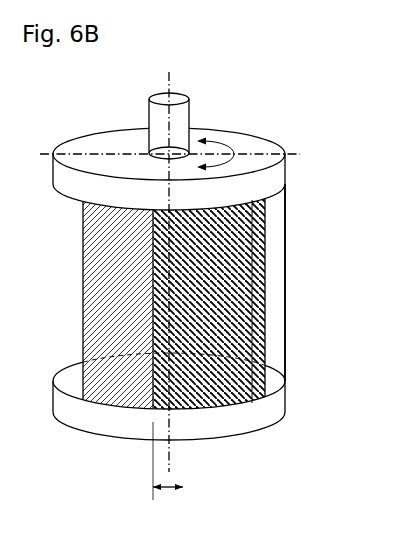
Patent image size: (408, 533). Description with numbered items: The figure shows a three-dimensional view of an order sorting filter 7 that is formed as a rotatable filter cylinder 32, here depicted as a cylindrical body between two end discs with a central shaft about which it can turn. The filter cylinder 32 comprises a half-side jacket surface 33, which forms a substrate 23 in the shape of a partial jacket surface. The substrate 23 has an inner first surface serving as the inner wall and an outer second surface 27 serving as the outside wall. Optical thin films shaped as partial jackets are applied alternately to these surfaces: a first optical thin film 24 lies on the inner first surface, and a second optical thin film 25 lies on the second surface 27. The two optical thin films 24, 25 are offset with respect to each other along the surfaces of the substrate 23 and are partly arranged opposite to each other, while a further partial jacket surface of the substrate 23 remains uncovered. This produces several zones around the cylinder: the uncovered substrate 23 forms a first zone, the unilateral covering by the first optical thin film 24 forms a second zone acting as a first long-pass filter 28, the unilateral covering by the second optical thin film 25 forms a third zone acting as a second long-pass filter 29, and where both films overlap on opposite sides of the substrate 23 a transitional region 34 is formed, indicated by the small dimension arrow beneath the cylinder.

The order sorting filter 7 is at (216, 140).
The rotatable filter cylinder 32 is at (322, 124).
The substrate 23 is at (277, 258).
The second surface 27 is at (290, 280).
The half-side jacket surface 33 is at (290, 325).
The first optical thin film 24 is at (224, 331).
The first long-pass filter 28 is at (222, 373).
The second optical thin film 25 is at (110, 331).
The second long-pass filter 29 is at (121, 373).
The transitional region 34 is at (154, 461).